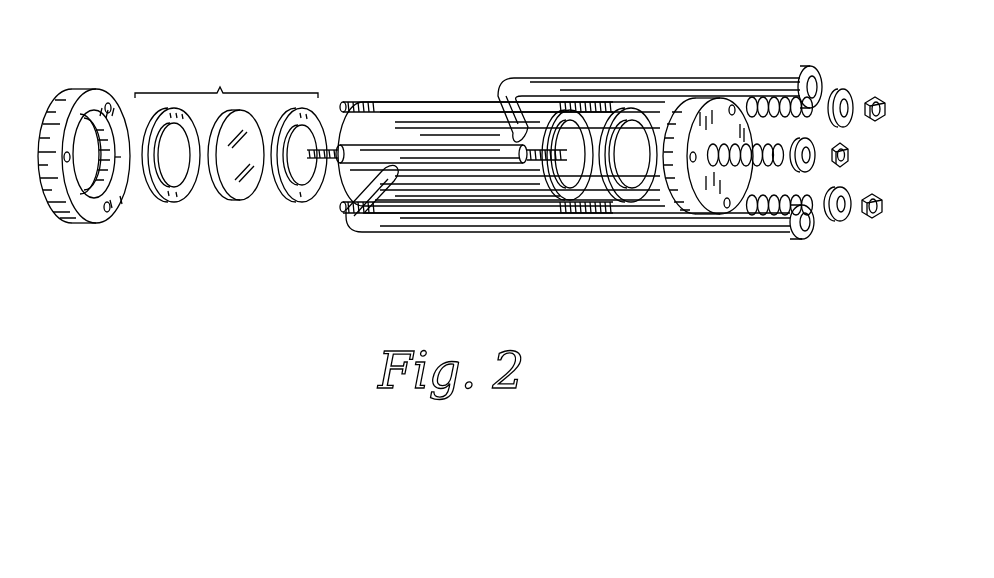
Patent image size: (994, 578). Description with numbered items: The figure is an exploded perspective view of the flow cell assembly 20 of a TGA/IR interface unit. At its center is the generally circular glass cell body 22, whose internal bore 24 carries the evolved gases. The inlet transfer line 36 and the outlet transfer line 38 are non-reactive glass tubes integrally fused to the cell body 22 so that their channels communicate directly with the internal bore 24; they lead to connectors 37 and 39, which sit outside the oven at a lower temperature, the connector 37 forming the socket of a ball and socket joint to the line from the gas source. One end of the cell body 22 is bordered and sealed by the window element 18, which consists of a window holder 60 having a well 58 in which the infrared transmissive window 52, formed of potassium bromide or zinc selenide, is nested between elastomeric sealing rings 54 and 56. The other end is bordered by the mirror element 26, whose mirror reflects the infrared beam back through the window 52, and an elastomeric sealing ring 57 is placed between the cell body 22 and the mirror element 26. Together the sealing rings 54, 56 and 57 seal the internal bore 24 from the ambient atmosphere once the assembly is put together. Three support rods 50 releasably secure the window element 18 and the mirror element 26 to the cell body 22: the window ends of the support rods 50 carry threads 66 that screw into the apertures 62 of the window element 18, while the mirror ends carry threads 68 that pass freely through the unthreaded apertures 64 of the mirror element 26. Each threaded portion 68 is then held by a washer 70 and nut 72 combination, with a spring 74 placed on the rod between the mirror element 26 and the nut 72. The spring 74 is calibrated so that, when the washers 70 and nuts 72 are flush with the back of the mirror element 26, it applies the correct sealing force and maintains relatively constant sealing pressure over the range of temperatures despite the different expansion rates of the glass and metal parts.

The window element 18 is at (220, 84).
The flow cell assembly 20 is at (475, 86).
The cell body 22 is at (442, 127).
The internal bore 24 is at (557, 207).
The mirror element 26 is at (715, 214).
The inlet transfer line 36 is at (593, 77).
The connector 37 is at (800, 65).
The outlet transfer line 38 is at (420, 230).
The connector 39 is at (812, 233).
The support rods 50 is at (407, 98).
The window 52 is at (247, 197).
The elastomeric sealing ring 54 is at (193, 188).
The elastomeric sealing ring 56 is at (305, 192).
The elastomeric sealing ring 57 is at (642, 200).
The well 58 is at (118, 188).
The window holder 60 is at (87, 90).
The apertures 62 is at (115, 105).
The apertures 64 is at (708, 213).
The threads 66 is at (307, 150).
The threads 68 is at (593, 213).
The washer 70 is at (840, 89).
The nut 72 is at (874, 97).
The spring 74 is at (745, 200).